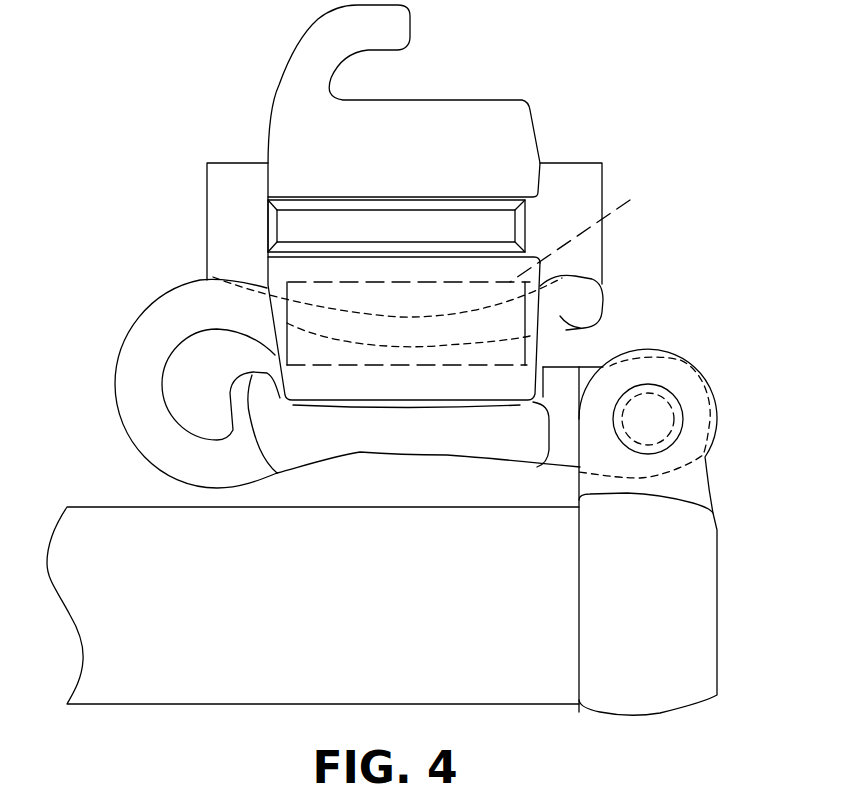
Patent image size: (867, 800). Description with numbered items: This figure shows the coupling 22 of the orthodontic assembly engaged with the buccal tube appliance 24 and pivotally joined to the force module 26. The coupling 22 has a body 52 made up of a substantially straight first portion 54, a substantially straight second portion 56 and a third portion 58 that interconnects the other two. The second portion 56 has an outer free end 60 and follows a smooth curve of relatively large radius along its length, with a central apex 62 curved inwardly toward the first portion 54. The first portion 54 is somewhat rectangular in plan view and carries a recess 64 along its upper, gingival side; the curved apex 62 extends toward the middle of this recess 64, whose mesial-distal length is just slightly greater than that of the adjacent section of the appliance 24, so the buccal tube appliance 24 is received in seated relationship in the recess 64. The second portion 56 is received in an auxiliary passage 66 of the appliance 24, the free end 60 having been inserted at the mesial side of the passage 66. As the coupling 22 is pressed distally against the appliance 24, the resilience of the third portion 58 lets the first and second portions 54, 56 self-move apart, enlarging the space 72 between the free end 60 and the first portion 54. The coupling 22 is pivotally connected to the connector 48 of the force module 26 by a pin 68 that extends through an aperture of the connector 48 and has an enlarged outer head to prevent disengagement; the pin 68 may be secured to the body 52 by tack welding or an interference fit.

The coupling 22 is at (104, 351).
The buccal tube appliance 24 is at (542, 122).
The force module 26 is at (126, 718).
The connector 48 is at (690, 488).
The body 52 is at (156, 288).
The first portion 54 is at (415, 447).
The second portion 56 is at (540, 343).
The third portion 58 is at (127, 395).
The free end 60 is at (600, 295).
The central apex 62 is at (207, 275).
The recess 64 is at (542, 463).
The auxiliary passage 66 is at (586, 228).
The pin 68 is at (650, 418).
The space 72 is at (543, 358).